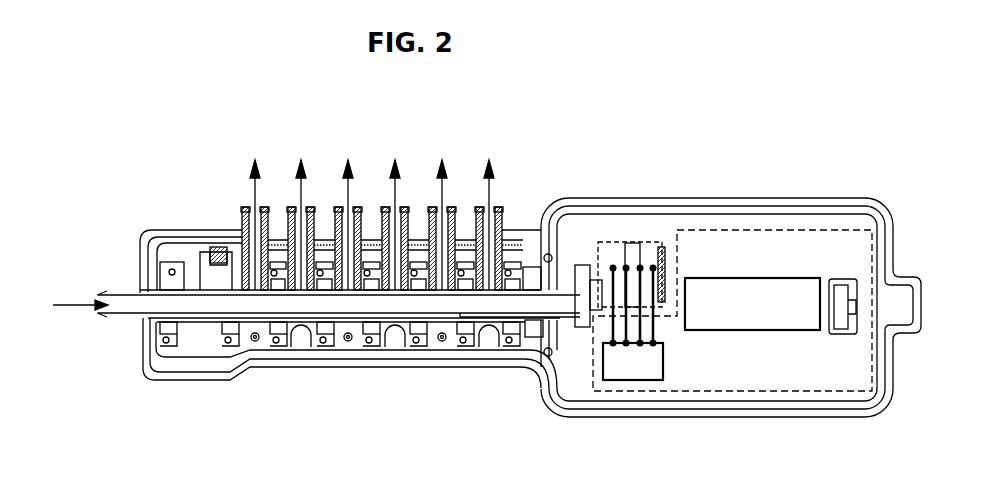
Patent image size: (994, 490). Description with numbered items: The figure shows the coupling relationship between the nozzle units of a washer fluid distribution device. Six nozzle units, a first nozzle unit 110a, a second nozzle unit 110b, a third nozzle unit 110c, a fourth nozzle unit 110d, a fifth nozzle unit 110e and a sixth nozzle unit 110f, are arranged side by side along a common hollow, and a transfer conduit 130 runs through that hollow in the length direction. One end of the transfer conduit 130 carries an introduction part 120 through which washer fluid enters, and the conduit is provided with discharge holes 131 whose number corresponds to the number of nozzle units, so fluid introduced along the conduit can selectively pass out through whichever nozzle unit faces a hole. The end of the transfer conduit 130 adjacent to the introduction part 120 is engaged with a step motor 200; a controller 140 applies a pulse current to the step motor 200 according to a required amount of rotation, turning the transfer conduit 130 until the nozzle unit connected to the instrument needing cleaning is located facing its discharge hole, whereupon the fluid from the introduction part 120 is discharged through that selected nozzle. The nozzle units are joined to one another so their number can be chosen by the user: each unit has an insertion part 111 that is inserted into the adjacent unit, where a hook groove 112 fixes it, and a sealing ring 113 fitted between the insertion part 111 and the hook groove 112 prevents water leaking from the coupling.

The step motor 200 is at (733, 203).
The controller 140 is at (762, 392).
The introduction part 120 is at (112, 316).
The hook groove 112 is at (240, 246).
The insertion part 111 is at (272, 207).
The first nozzle unit 110a is at (364, 202).
The second nozzle unit 110b is at (410, 207).
The third nozzle unit 110c is at (455, 210).
The fourth nozzle unit 110d is at (505, 207).
The fifth nozzle unit 110e is at (318, 207).
The sixth nozzle unit 110f is at (245, 203).
The transfer conduit 130 is at (299, 330).
The sealing ring 113 is at (278, 340).
The discharge holes 131 is at (347, 296).